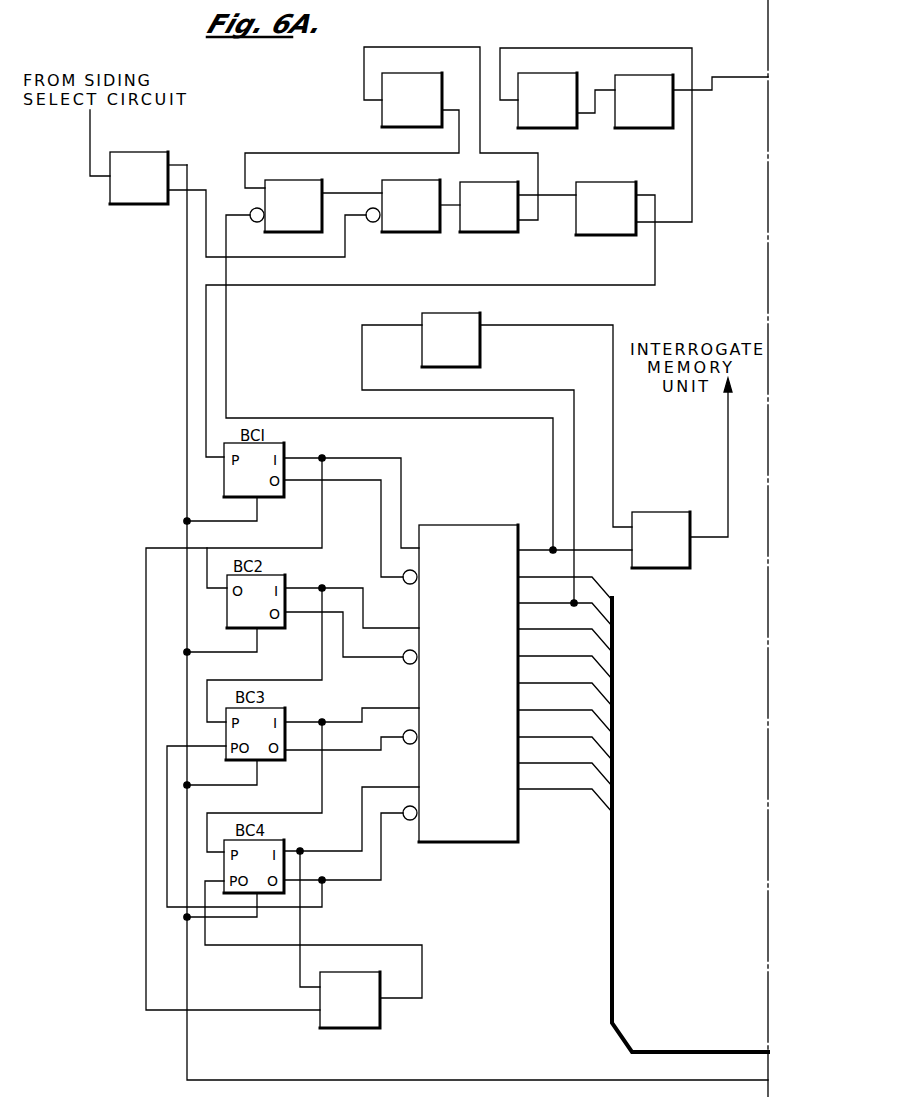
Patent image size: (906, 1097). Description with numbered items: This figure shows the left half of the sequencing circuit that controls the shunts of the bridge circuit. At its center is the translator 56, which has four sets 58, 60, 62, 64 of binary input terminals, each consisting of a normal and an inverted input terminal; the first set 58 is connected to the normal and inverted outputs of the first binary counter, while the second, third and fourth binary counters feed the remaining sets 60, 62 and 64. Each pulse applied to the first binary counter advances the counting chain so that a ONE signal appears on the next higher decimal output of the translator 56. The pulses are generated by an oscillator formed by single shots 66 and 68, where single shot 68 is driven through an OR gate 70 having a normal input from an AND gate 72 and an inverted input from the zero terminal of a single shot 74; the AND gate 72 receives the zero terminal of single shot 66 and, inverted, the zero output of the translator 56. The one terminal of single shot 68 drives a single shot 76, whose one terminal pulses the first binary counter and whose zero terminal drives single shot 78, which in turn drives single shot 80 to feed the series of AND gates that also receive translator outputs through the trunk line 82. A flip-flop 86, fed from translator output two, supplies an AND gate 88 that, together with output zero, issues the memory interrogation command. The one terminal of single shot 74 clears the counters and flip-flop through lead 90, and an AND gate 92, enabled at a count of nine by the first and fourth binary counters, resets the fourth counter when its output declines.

The translator 56 is at (458, 525).
The set of binary input terminals 58 is at (401, 568).
The set of binary input terminals 60 is at (395, 647).
The set of binary input terminals 62 is at (390, 727).
The set of binary input terminals 64 is at (396, 805).
The single shot 66 is at (428, 73).
The single shot 68 is at (485, 233).
The OR gate 70 is at (410, 233).
The AND gate 72 is at (302, 178).
The single shot 74 is at (153, 151).
The single shot 76 is at (608, 181).
The single shot 78 is at (555, 73).
The single shot 80 is at (630, 75).
The trunk line 82 is at (614, 871).
The flip-flop 86 is at (480, 313).
The AND gate 88 is at (660, 512).
The lead 90 is at (186, 490).
The AND gate 92 is at (383, 1015).